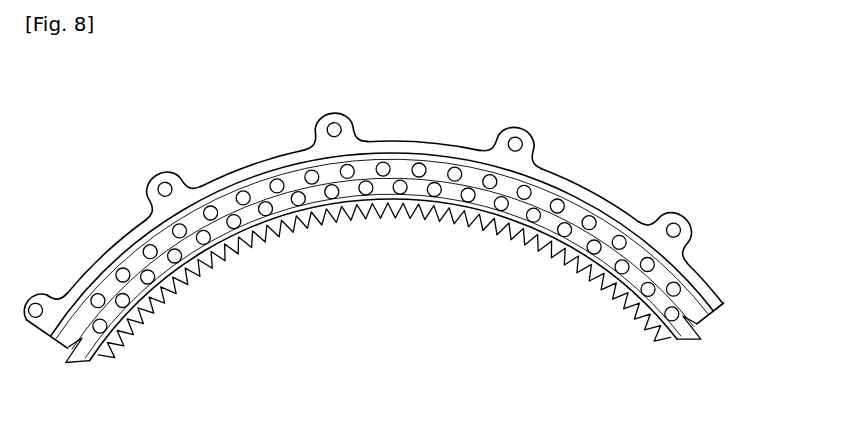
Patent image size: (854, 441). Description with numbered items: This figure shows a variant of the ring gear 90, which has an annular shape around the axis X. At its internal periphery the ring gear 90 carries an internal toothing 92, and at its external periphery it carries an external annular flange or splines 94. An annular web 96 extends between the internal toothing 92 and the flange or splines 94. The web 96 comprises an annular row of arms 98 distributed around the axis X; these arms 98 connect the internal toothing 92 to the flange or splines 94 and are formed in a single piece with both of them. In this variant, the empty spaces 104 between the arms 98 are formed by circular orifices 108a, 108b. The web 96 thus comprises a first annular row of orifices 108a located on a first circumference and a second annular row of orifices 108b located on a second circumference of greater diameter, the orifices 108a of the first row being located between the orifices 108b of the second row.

The ring gear 90 is at (423, 231).
The internal toothing 92 is at (383, 308).
The external annular flange or splines 94 is at (363, 221).
The annular web 96 is at (425, 258).
The arms 98 is at (563, 243).
The empty spaces 104 is at (183, 237).
The orifices of the first row 108a is at (434, 196).
The orifices of the second row 108b is at (456, 167).